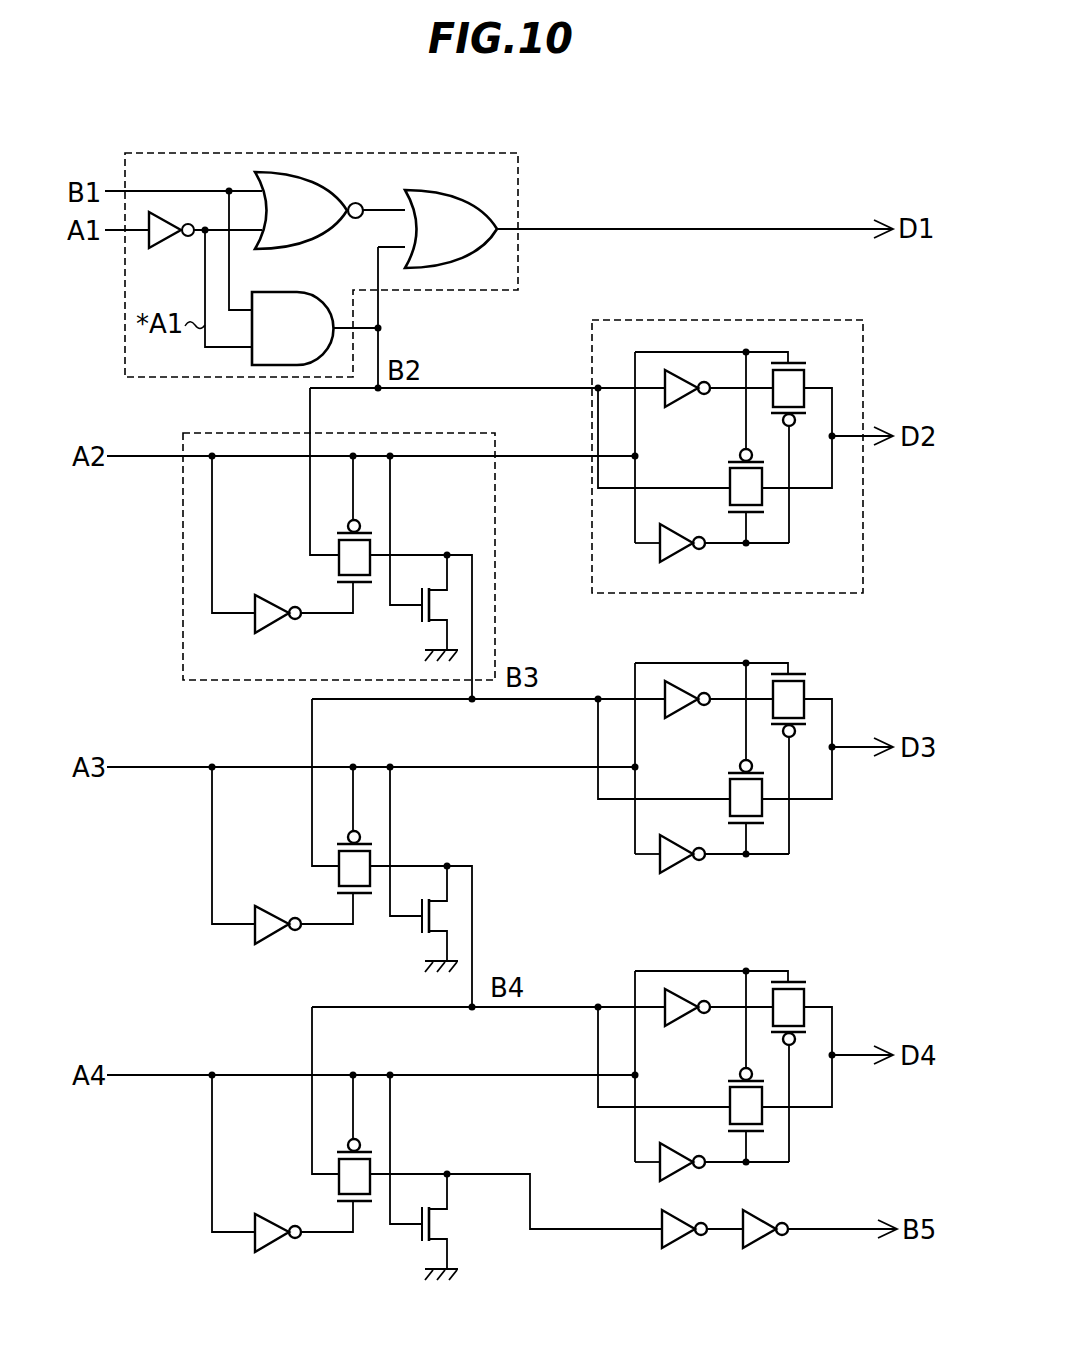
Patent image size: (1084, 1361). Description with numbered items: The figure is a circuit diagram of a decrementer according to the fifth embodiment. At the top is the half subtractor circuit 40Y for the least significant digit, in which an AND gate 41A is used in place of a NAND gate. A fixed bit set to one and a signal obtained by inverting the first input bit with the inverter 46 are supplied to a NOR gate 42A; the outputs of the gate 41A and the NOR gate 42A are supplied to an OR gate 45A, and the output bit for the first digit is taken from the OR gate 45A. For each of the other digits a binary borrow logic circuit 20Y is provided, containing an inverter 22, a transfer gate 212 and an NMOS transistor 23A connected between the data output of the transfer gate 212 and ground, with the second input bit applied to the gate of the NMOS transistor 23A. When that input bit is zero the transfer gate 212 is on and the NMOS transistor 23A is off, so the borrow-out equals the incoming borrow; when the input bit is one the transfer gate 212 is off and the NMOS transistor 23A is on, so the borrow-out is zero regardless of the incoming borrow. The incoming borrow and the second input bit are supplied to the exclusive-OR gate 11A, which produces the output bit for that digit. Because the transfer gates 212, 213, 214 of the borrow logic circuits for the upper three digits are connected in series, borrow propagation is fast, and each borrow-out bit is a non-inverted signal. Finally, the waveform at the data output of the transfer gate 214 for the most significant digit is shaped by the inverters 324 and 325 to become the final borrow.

The half subtractor circuit 40Y is at (327, 153).
The NOR gate 42A is at (318, 173).
The OR gate 45A is at (453, 190).
The AND gate 41A is at (295, 292).
The inverter 46 is at (175, 240).
The exclusive-OR gate 11A is at (717, 320).
The binary borrow logic circuit 20Y is at (183, 560).
The inverter 22 is at (256, 605).
The transfer gate 212 is at (339, 563).
The NMOS transistor 23A is at (437, 622).
The transfer gate 213 is at (339, 874).
The transfer gate 214 is at (339, 1182).
The inverter 324 is at (680, 1249).
The inverter 325 is at (761, 1249).